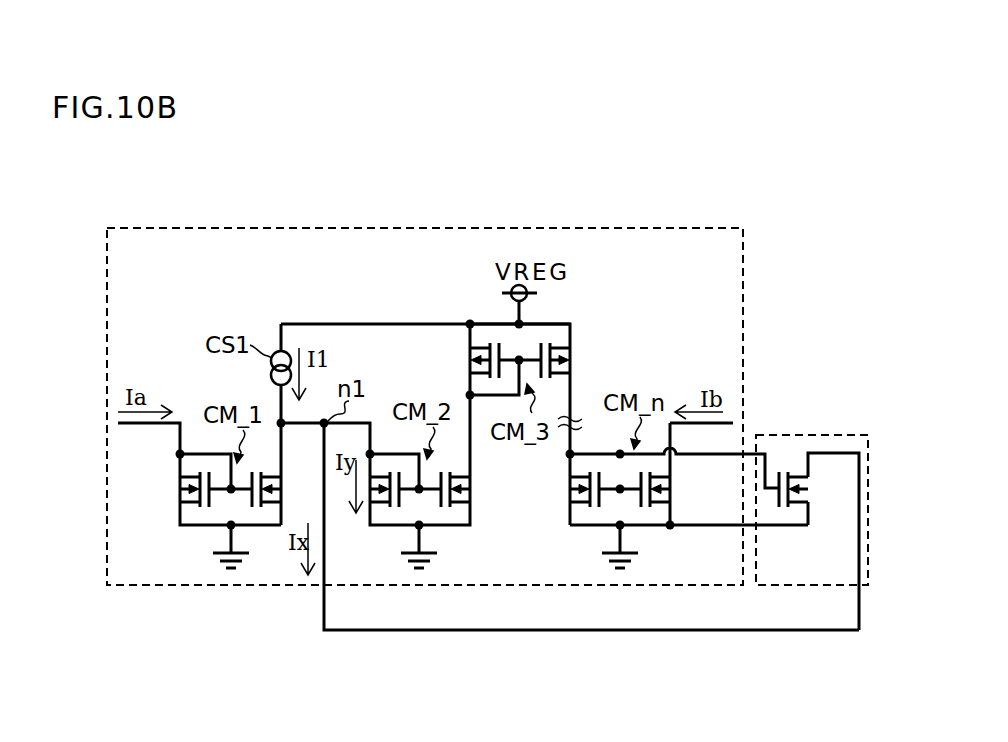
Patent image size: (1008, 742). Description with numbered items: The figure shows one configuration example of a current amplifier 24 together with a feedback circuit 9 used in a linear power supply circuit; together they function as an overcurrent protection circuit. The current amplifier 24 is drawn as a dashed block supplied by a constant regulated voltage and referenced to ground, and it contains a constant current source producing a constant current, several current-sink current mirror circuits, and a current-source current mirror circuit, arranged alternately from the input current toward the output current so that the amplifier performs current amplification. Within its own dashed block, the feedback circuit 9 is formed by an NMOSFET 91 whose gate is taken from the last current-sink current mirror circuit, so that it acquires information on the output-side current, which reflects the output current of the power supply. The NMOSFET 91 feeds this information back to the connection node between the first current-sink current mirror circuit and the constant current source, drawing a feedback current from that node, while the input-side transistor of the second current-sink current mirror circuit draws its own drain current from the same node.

The current amplifier 24 is at (519, 228).
The feedback circuit 9 is at (808, 435).
The NMOSFET 91 is at (810, 490).